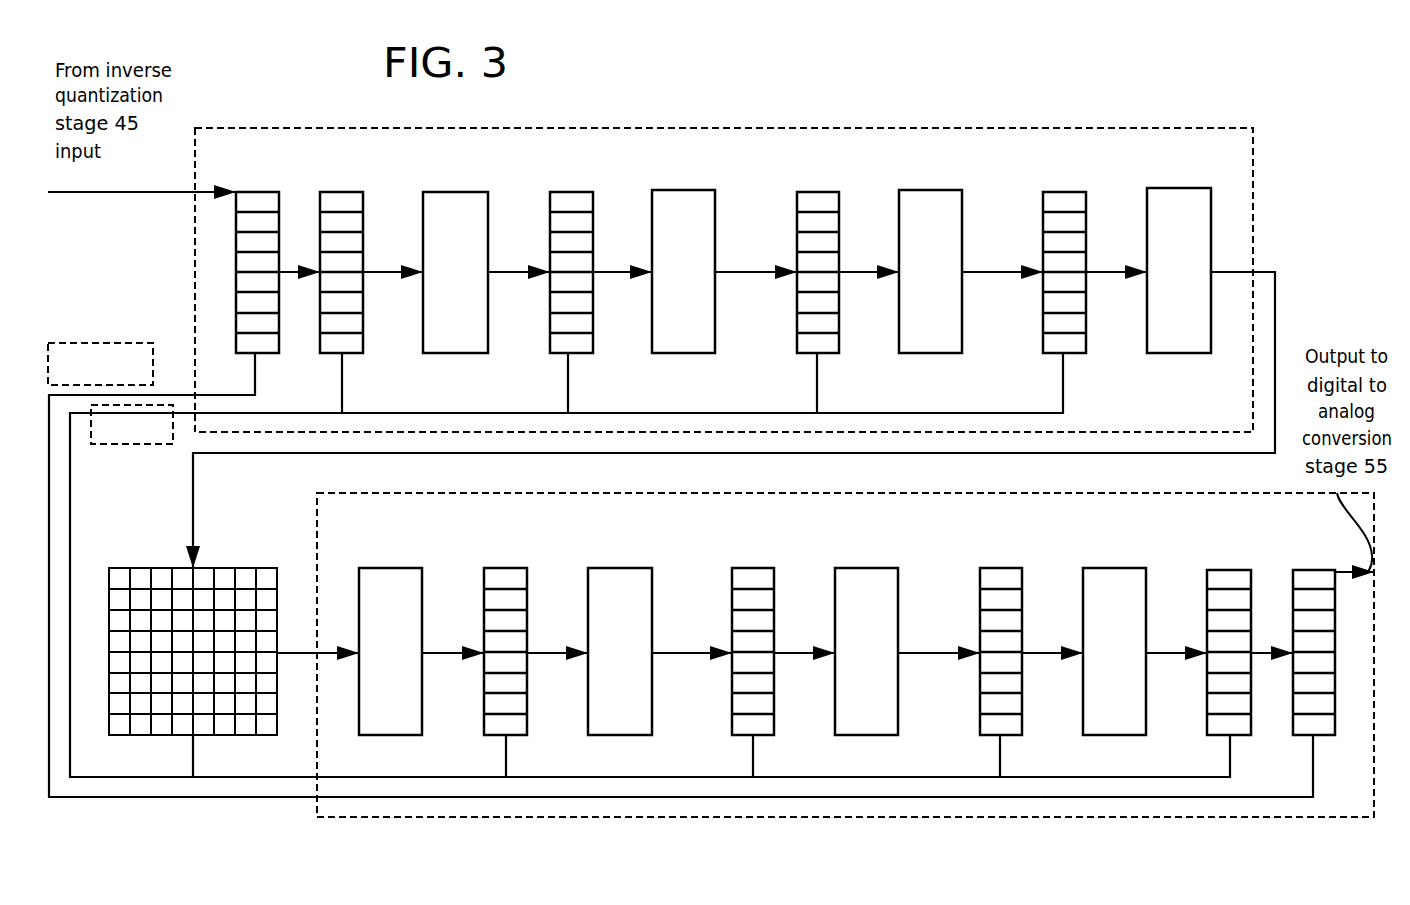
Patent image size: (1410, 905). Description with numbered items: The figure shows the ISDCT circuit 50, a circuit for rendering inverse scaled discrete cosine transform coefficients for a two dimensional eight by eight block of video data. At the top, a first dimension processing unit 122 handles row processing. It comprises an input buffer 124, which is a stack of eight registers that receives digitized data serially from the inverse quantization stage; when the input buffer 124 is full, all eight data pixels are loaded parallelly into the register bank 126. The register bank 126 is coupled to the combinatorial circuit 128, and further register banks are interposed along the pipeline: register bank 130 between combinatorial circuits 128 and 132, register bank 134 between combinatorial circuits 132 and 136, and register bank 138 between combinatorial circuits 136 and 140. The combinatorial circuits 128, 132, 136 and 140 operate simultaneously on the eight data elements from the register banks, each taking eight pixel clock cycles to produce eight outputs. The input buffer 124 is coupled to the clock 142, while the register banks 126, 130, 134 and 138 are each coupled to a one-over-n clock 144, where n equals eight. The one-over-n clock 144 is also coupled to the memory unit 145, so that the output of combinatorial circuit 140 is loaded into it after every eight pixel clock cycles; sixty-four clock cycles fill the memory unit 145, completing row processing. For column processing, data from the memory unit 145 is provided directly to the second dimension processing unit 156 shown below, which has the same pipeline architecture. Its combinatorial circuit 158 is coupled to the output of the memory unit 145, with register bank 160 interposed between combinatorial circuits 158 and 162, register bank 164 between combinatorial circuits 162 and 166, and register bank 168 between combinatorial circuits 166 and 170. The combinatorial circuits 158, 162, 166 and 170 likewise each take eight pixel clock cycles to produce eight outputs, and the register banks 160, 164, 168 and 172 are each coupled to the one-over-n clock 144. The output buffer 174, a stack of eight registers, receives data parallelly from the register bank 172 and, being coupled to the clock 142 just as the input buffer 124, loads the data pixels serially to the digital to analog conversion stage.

The ISDCT circuit 50 is at (1242, 95).
The first dimension processing unit 122 is at (1140, 127).
The input buffer 124 is at (263, 355).
The register bank 126 is at (347, 355).
The combinatorial circuit 128 is at (445, 190).
The register bank 130 is at (578, 355).
The combinatorial circuit 132 is at (678, 188).
The register bank 134 is at (823, 355).
The combinatorial circuit 136 is at (930, 188).
The register bank 138 is at (1070, 355).
The combinatorial circuit 140 is at (1168, 186).
The clock 142 is at (88, 343).
The 1/n clock 144 is at (128, 446).
The memory unit 145 is at (145, 568).
The second dimension processing unit 156 is at (1243, 818).
The combinatorial circuit 158 is at (385, 566).
The register bank 160 is at (514, 737).
The combinatorial circuit 162 is at (612, 566).
The register bank 164 is at (762, 737).
The combinatorial circuit 166 is at (858, 566).
The register bank 168 is at (1010, 737).
The combinatorial circuit 170 is at (1092, 566).
The register bank 172 is at (1260, 752).
The output buffer 174 is at (1322, 737).